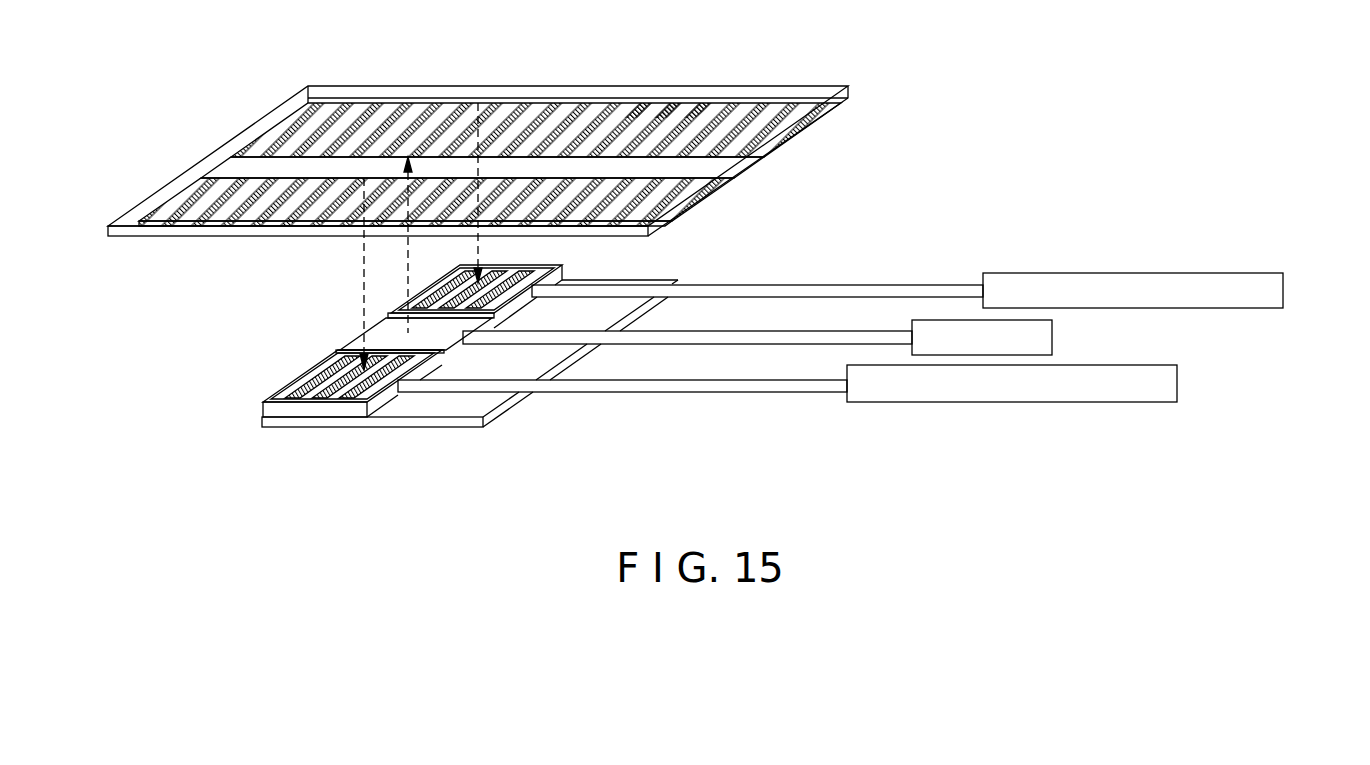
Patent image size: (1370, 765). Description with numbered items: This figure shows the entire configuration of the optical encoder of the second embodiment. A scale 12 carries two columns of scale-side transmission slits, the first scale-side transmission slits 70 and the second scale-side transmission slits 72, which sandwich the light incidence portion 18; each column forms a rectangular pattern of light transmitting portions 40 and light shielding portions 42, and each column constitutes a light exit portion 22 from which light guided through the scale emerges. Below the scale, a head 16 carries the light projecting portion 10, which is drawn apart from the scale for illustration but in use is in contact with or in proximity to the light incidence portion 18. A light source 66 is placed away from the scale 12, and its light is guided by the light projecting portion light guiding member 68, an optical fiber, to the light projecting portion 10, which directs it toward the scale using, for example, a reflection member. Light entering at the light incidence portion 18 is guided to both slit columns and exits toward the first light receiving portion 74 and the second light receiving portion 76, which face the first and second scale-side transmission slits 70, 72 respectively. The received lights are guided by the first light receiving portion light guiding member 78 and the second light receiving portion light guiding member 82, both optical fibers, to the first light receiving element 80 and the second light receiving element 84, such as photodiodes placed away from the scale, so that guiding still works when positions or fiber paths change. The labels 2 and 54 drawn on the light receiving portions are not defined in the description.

The scale 12 is at (850, 88).
The light exit portion 22 is at (507, 148).
The first scale-side transmission slits 70 is at (805, 128).
The second scale-side transmission slits 72 is at (703, 199).
The light incidence portion 18 is at (738, 165).
The light transmitting portions 40 is at (662, 103).
The light shielding portions 42 is at (688, 103).
The optical sensor unit 2 is at (372, 341).
The first light receiving portion 74 is at (420, 292).
The light projecting portion 10 is at (360, 333).
The grating pattern 54 is at (308, 368).
The second light receiving portion 76 is at (312, 390).
The head 16 is at (414, 428).
The first light receiving portion light guiding member 78 is at (737, 298).
The light projecting portion light guiding member 68 is at (808, 345).
The second light receiving portion light guiding member 82 is at (562, 394).
The first light receiving element 80 is at (1283, 292).
The light source 66 is at (1052, 338).
The second light receiving element 84 is at (1177, 384).